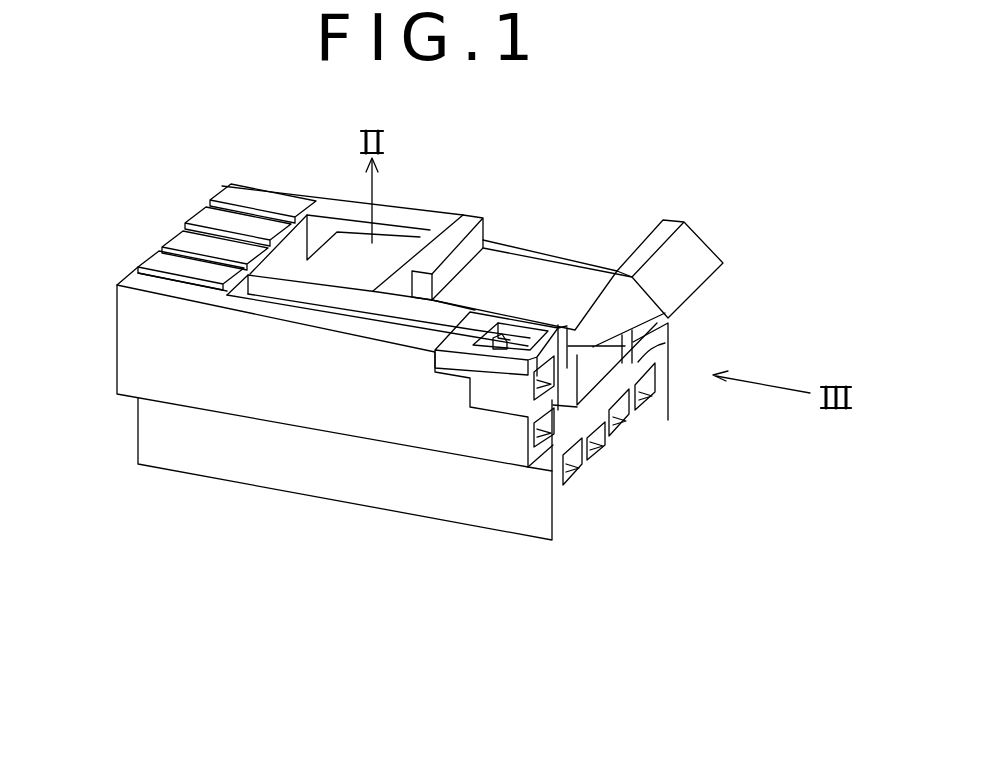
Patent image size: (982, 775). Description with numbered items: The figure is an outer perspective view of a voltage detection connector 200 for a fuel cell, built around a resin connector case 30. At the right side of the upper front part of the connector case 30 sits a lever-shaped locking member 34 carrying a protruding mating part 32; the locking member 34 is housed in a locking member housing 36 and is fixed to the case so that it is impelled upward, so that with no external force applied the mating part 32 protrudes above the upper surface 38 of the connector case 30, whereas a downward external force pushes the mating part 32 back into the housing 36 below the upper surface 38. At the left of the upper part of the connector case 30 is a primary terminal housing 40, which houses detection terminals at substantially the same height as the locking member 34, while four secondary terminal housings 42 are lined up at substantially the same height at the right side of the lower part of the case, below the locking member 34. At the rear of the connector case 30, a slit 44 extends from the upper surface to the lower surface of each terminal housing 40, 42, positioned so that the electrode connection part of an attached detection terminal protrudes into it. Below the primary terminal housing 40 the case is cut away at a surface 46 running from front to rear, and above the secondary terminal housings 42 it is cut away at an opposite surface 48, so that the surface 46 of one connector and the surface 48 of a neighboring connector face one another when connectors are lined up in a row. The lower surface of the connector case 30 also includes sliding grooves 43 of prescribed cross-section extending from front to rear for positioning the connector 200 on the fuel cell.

The connector case 30 is at (127, 333).
The protruding mating part 32 is at (470, 222).
The locking member 34 is at (543, 270).
The locking member housing 36 is at (668, 337).
The upper surface 38 is at (305, 210).
The primary terminal housing 40 is at (552, 447).
The secondary terminal housing 42 is at (660, 432).
The sliding groove 43 is at (667, 423).
The slit 44 is at (156, 276).
The surface 46 is at (173, 405).
The surface 48 is at (650, 347).
The voltage detection connector 200 is at (410, 656).